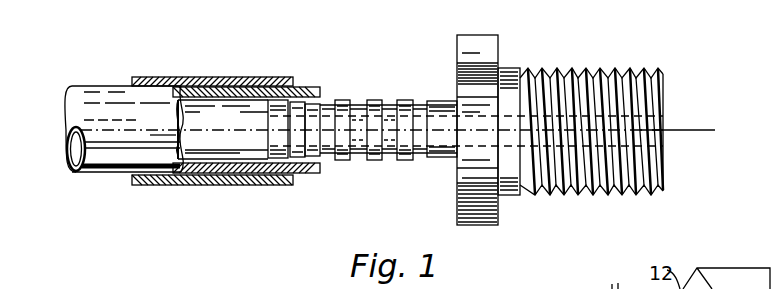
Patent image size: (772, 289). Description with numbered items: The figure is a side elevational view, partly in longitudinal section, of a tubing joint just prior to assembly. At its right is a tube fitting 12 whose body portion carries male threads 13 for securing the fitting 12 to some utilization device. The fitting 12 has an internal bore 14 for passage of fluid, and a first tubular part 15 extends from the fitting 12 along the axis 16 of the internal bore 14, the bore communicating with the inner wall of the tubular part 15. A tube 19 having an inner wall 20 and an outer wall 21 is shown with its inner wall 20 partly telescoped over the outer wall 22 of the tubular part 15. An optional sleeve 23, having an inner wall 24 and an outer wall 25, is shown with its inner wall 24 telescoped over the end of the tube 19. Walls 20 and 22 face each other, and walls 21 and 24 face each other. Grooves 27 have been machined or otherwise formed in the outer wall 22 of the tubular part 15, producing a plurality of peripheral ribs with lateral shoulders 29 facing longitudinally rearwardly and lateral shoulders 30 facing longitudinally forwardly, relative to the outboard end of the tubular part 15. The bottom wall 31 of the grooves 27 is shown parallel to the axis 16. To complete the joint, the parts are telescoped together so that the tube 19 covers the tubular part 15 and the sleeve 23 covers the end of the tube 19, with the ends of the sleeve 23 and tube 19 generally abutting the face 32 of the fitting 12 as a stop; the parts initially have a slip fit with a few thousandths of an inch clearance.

The tube fitting 12 is at (490, 55).
The male threads 13 is at (568, 78).
The internal bore 14 is at (663, 130).
The first tubular part 15 is at (371, 101).
The axis 16 is at (683, 136).
The tube 19 is at (107, 86).
The inner wall 20 is at (240, 106).
The outer wall 21 is at (227, 78).
The outer wall 22 is at (345, 100).
The sleeve 23 is at (128, 86).
The inner wall 24 is at (164, 95).
The outer wall 25 is at (152, 80).
The grooves 27 is at (421, 149).
The lateral shoulders 29 is at (420, 101).
The lateral shoulders 30 is at (367, 149).
The bottom wall 31 is at (344, 100).
The face 32 is at (457, 50).